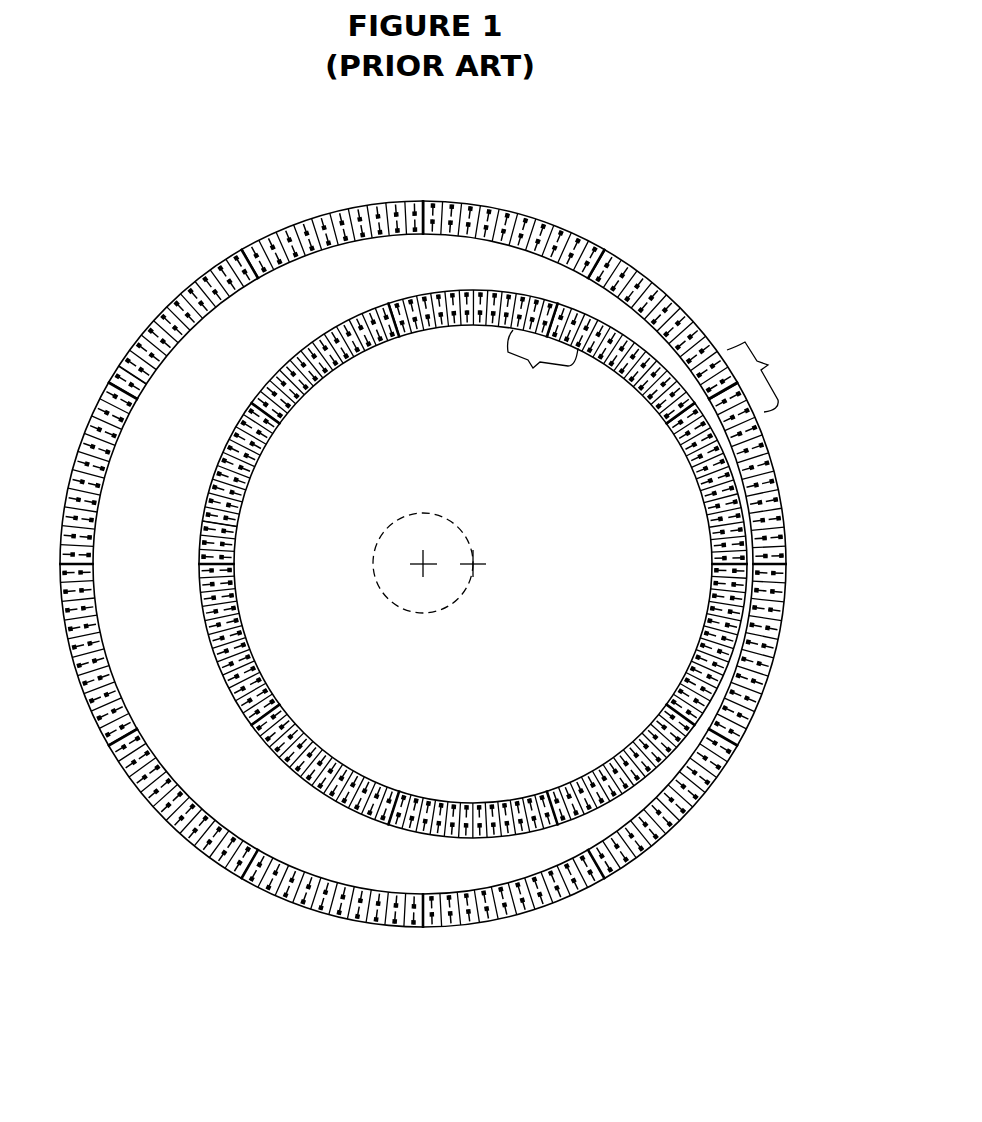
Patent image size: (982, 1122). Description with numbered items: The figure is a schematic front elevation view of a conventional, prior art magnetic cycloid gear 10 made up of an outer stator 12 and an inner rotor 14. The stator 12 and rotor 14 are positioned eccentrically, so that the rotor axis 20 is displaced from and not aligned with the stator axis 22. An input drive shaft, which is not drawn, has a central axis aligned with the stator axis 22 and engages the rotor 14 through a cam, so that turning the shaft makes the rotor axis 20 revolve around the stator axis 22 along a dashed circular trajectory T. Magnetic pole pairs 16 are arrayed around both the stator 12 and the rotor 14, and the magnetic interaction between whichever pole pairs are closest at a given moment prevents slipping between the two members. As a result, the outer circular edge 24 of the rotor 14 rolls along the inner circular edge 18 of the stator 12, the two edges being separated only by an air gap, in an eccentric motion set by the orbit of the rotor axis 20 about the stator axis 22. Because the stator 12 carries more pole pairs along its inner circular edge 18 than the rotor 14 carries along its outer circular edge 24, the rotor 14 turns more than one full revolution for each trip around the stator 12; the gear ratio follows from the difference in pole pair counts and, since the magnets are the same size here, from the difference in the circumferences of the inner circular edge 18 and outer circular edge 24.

The magnetic cycloid gear 10 is at (423, 551).
The stator 12 is at (285, 230).
The rotor 14 is at (287, 362).
The magnetic pole pairs 16 is at (768, 365).
The inner circular edge 18 is at (153, 389).
The rotor axis 20 is at (474, 566).
The stator axis 22 is at (423, 567).
The outer circular edge 24 is at (197, 525).
The eccentricity circle T is at (398, 520).